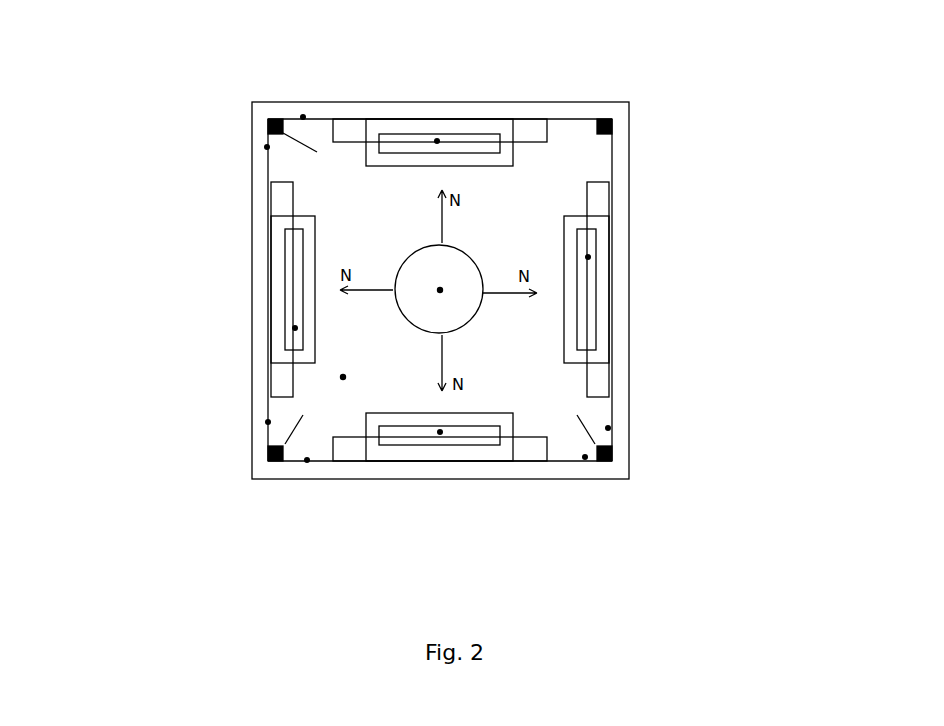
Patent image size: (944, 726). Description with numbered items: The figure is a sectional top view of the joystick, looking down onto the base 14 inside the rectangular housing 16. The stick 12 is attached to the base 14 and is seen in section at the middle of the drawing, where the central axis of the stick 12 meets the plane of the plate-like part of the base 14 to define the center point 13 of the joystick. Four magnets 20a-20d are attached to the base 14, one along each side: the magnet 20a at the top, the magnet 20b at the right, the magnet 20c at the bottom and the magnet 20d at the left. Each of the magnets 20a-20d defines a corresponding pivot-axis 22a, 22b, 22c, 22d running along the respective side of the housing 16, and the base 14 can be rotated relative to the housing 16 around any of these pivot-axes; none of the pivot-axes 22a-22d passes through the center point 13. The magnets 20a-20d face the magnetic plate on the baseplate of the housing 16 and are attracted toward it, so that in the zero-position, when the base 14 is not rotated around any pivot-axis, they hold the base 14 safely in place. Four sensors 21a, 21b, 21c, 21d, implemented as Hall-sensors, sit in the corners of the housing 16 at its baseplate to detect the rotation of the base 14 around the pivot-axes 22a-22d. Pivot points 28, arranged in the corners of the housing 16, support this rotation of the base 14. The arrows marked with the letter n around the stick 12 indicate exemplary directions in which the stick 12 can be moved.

The stick 12 is at (397, 275).
The center point 13 is at (440, 290).
The base 14 is at (343, 377).
The housing 16 is at (257, 187).
The magnet 20a is at (472, 141).
The magnet 20b is at (586, 325).
The magnet 20c is at (420, 433).
The magnet 20d is at (295, 290).
The magnets 20a-20d is at (440, 432).
The sensor 21a is at (577, 415).
The sensor 21b is at (303, 415).
The sensor 21c is at (611, 119).
The sensor 21d is at (317, 152).
The pivot-axis 22a is at (463, 462).
The pivot-axis 22b is at (268, 329).
The pivot-axis 22c is at (423, 117).
The pivot-axis 22d is at (608, 210).
The pivot points 28 is at (267, 147).